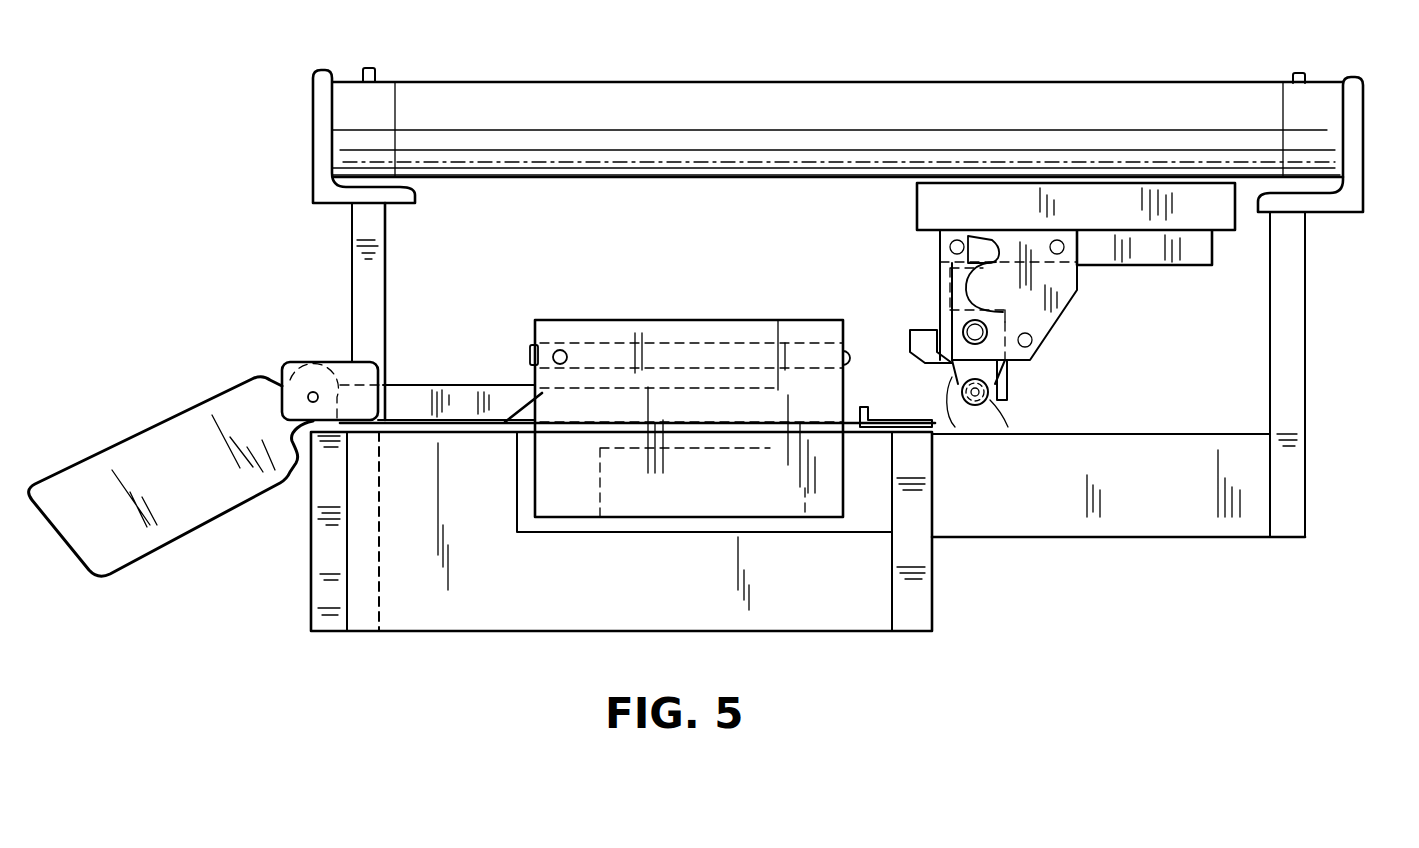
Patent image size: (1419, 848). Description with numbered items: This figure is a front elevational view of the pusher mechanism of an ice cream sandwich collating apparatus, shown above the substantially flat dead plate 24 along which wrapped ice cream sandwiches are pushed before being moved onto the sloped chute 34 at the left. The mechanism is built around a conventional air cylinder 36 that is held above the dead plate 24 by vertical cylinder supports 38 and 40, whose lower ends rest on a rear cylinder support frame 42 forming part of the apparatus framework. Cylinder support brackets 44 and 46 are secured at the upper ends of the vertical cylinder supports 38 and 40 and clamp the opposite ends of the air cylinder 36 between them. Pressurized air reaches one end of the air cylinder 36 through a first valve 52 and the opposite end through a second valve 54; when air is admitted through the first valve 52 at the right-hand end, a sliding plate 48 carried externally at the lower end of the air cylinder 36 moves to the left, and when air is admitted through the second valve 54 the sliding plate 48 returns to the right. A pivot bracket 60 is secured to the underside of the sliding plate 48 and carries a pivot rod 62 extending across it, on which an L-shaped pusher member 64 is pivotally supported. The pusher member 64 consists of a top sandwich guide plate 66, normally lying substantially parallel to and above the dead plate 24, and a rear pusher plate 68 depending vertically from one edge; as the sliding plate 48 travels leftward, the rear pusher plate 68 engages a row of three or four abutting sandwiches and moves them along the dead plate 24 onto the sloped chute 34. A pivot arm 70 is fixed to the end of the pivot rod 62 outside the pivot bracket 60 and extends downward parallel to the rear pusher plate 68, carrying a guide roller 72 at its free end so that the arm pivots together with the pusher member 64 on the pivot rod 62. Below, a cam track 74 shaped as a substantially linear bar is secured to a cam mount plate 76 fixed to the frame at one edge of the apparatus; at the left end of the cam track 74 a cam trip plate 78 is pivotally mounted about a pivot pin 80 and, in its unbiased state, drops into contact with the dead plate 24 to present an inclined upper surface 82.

The dead plate 24 is at (940, 432).
The sloped chute 34 is at (172, 428).
The air cylinder 36 is at (488, 82).
The vertical cylinder support 38 is at (352, 297).
The vertical cylinder support 40 is at (1307, 300).
The rear cylinder support frame 42 is at (1095, 535).
The cylinder support bracket 44 is at (313, 152).
The cylinder support bracket 46 is at (1365, 126).
The sliding plate 48 is at (917, 214).
The first valve 52 is at (1293, 74).
The second valve 54 is at (370, 64).
The pivot bracket 60 is at (1060, 318).
The pivot rod 62 is at (965, 326).
The pusher member 64 is at (935, 374).
The top sandwich guide plate 66 is at (917, 330).
The rear pusher plate 68 is at (1008, 390).
The pivot arm 70 is at (954, 378).
The guide roller 72 is at (990, 400).
The cam track 74 is at (725, 320).
The cam mount plate 76 is at (688, 320).
The cam trip plate 78 is at (528, 345).
The pivot pin 80 is at (562, 345).
The inclined upper surface 82 is at (510, 418).